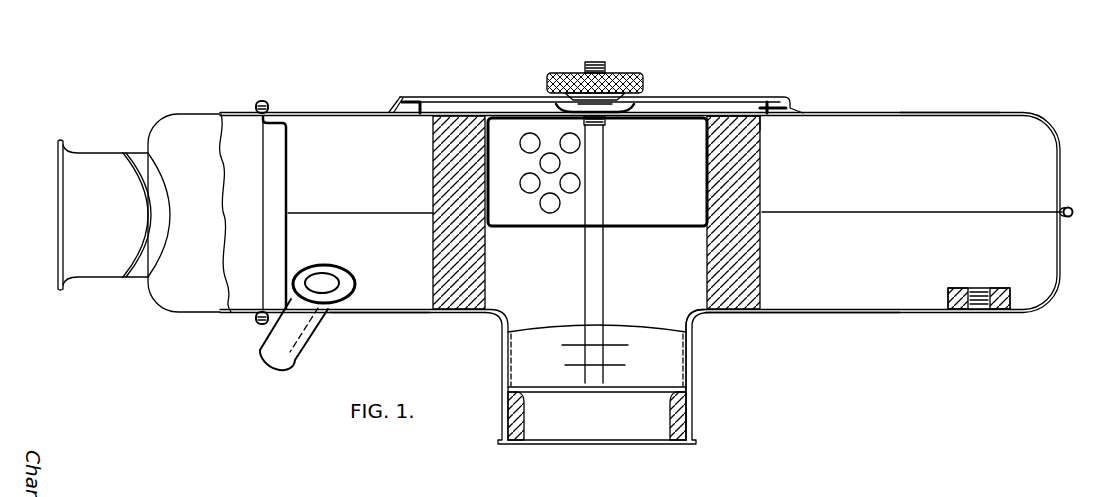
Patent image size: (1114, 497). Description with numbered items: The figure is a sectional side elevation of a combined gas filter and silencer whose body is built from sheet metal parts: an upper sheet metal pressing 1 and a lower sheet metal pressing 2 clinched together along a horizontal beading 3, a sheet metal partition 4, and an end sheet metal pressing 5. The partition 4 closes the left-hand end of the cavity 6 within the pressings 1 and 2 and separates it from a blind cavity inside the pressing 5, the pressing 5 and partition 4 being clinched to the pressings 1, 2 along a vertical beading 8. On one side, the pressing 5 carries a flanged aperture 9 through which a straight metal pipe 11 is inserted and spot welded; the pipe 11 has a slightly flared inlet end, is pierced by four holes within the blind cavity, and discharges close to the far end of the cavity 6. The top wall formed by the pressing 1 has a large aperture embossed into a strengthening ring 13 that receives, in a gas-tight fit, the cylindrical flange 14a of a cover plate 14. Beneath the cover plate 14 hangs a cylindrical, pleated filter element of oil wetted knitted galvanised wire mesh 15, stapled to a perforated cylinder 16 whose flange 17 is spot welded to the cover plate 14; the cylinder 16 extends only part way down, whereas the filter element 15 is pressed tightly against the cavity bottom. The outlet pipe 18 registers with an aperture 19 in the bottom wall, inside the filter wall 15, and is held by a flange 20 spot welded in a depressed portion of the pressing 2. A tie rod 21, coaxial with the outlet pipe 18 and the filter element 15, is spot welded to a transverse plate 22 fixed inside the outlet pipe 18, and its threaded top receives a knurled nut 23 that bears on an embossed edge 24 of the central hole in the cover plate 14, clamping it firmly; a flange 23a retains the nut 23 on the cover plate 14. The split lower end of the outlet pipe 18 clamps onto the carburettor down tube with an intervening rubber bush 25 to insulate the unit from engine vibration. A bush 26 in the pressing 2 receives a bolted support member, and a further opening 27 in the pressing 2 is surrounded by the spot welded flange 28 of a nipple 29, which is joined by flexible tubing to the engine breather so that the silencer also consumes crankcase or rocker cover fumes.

The upper sheet metal pressing 1 is at (883, 112).
The lower sheet metal pressing 2 is at (832, 313).
The horizontal beading 3 is at (1073, 208).
The sheet metal partition 4 is at (289, 147).
The sheet metal pressing 5 is at (172, 118).
The cavity 6 is at (961, 122).
The vertical beading 8 is at (268, 104).
The flanged aperture 9 is at (131, 282).
The straight metal pipe 11 is at (76, 282).
The strengthening ring 13 is at (401, 118).
The cover plate 14 is at (709, 113).
The flange 14a is at (426, 108).
The wire mesh filter element 15 is at (708, 208).
The perforated cylinder 16 is at (488, 214).
The flange 17 is at (700, 118).
The outlet pipe 18 is at (500, 340).
The aperture 19 is at (700, 323).
The flange 20 is at (740, 314).
The tie rod 21 is at (586, 259).
The transverse plate 22 is at (653, 379).
The knurled nut 23 is at (642, 80).
The flange 23a is at (610, 117).
The embossed edge 24 is at (634, 105).
The rubber bush 25 is at (672, 425).
The bush 26 is at (952, 297).
The opening 27 is at (336, 283).
The flange 28 is at (346, 294).
The nipple 29 is at (277, 343).